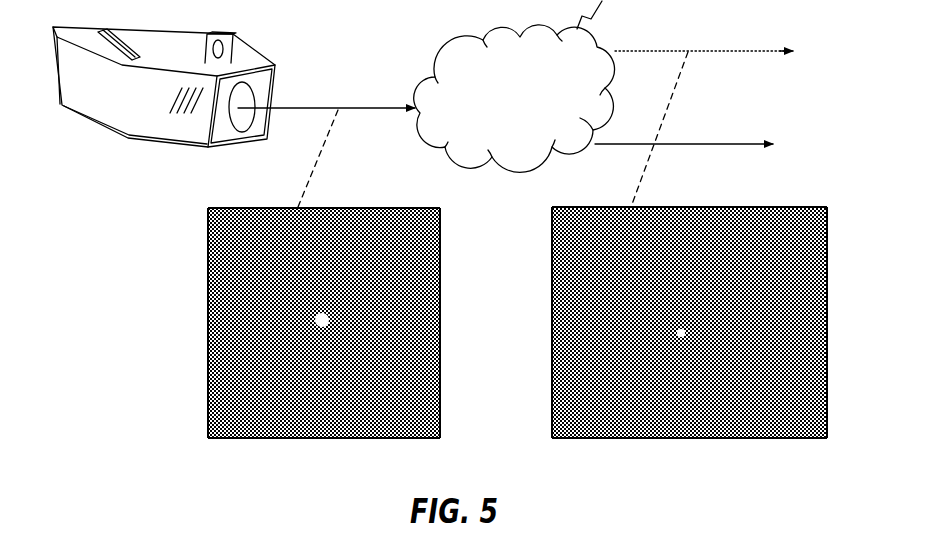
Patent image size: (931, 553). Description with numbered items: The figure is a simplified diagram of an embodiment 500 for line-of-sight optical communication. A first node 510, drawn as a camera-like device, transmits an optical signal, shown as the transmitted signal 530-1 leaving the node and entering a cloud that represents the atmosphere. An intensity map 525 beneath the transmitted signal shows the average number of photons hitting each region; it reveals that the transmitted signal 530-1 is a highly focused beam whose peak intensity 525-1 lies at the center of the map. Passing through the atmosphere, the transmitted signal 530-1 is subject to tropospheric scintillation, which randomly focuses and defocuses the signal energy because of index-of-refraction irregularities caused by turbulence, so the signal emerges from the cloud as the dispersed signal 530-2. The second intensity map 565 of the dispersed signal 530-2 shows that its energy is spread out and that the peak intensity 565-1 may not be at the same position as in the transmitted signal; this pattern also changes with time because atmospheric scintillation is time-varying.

The system / environment 500 is at (99, 373).
The first node 510 is at (247, 61).
The transmitted signal 530-1 is at (307, 107).
The dispersed signal 530-2 is at (730, 51).
The intensity map 525 is at (208, 387).
The peak intensity 525-1 is at (320, 319).
The intensity map 565 is at (552, 363).
The peak intensity 565-1 is at (684, 338).